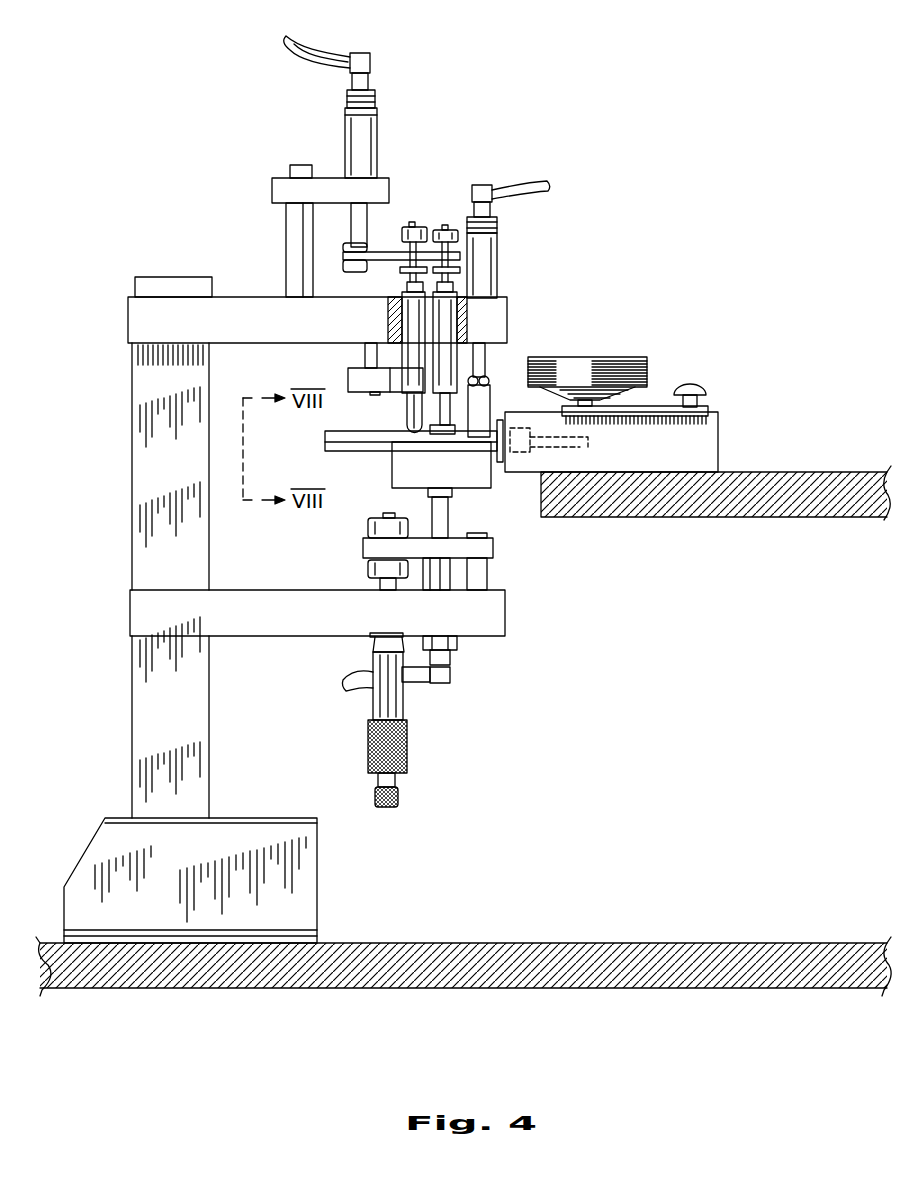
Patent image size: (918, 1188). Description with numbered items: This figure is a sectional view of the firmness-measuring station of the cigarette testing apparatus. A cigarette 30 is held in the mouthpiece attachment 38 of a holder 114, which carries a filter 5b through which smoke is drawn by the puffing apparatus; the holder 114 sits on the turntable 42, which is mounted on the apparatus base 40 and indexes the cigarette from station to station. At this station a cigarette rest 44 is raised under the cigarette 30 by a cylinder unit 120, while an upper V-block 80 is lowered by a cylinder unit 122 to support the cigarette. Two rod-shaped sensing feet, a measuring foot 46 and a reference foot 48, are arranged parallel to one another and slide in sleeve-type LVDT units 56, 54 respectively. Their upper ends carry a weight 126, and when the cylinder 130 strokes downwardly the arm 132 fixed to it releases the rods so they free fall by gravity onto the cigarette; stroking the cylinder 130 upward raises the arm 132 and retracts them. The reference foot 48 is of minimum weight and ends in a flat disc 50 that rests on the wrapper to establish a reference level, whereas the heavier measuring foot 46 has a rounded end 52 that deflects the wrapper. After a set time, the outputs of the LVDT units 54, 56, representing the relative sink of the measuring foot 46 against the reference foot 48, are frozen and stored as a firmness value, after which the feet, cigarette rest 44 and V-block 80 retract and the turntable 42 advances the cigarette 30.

The cylinder 130 is at (378, 142).
The arm 132 is at (383, 250).
The weight 126 is at (443, 228).
The cylinder unit 122 is at (497, 267).
The LVDT unit 56 is at (366, 350).
The LVDT unit 54 is at (486, 356).
The reference foot 48 is at (453, 402).
The upper V-block 80 is at (493, 383).
The filter 5b is at (645, 362).
The measuring foot 46 is at (402, 398).
The rounded end 52 is at (405, 422).
The flat disc 50 is at (457, 425).
The cigarette 30 is at (362, 452).
The cigarette rest 44 is at (393, 488).
The mouthpiece attachment 38 is at (502, 462).
The holder 114 is at (718, 455).
The turntable 42 is at (612, 517).
The cylinder unit 120 is at (455, 575).
The apparatus base 40 is at (668, 943).